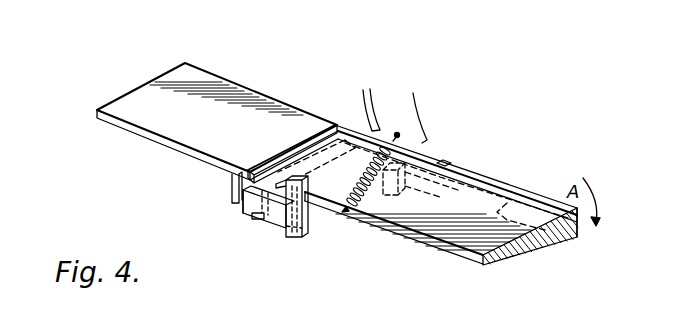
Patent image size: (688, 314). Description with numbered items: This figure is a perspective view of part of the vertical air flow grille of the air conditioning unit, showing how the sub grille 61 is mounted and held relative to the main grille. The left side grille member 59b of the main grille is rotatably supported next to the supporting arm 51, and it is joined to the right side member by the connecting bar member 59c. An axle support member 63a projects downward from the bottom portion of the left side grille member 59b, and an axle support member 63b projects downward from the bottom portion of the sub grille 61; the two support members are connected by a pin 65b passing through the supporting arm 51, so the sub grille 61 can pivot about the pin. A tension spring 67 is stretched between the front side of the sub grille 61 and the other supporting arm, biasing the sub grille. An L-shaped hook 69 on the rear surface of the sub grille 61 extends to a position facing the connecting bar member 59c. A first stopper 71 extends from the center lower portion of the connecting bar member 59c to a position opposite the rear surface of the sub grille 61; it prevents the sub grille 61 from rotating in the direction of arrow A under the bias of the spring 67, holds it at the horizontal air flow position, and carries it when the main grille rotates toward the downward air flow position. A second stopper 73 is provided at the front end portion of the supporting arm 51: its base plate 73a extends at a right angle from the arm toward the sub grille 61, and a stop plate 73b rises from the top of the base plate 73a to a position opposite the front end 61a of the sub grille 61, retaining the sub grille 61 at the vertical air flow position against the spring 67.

The supporting arm 51 is at (420, 115).
The left side grille member 59b is at (162, 148).
The connecting bar member 59c is at (483, 172).
The sub grille 61 is at (410, 240).
The front end of sub grille 61a is at (475, 262).
The axle support member 63a is at (232, 184).
The axle support member 63b is at (305, 244).
The pin 65b is at (262, 220).
The tension spring 67 is at (366, 210).
The L-shaped hook 69 is at (420, 195).
The first stopper 71 is at (572, 244).
The second stopper 73 is at (239, 236).
The base plate 73a is at (243, 210).
The stop plate 73b is at (310, 224).